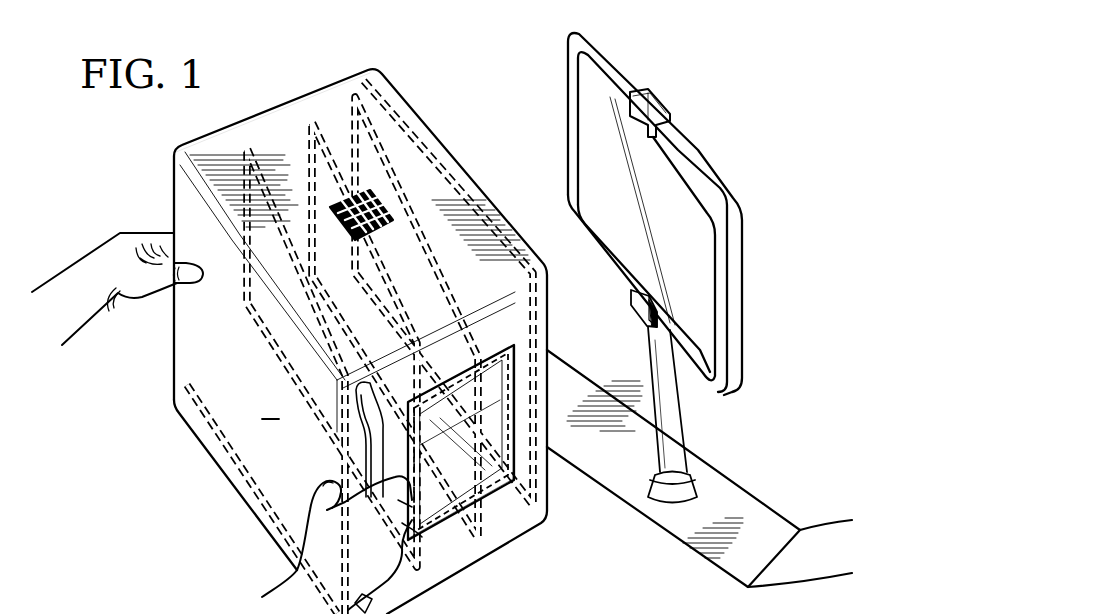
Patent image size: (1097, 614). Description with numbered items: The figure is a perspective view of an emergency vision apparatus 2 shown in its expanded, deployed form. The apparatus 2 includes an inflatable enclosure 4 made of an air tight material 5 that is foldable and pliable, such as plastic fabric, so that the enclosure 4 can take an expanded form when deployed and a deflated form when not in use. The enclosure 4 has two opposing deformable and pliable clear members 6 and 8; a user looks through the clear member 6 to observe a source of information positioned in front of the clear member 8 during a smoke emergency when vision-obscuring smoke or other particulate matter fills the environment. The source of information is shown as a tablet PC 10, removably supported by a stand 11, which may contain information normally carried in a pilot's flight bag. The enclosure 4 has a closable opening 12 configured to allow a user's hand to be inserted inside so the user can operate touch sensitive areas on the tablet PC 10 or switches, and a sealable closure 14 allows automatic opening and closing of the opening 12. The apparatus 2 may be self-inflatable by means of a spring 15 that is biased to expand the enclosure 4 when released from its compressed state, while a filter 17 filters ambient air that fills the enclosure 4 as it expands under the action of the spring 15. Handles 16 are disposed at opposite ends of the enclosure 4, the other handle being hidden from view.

The emergency vision apparatus 2 is at (337, 322).
The inflatable enclosure 4 is at (265, 111).
The air tight material 5 is at (205, 146).
The clear member 6 is at (273, 112).
The clear member 8 is at (448, 222).
The tablet PC 10 is at (630, 67).
The stand 11 is at (692, 427).
The closable opening 12 is at (470, 397).
The sealable closure 14 is at (463, 487).
The spring 15 is at (264, 333).
The handle 16 is at (374, 438).
The filter 17 is at (378, 207).